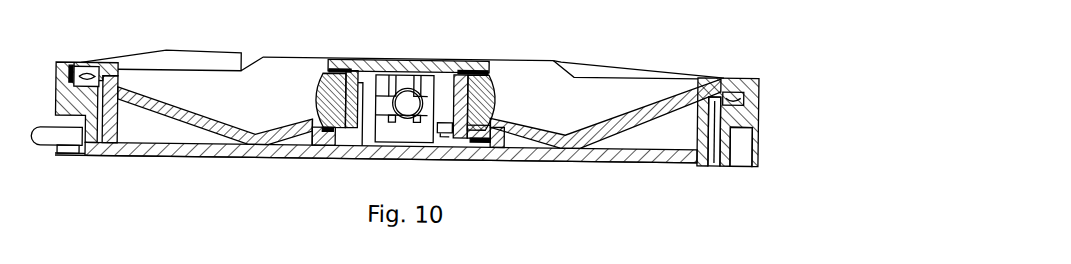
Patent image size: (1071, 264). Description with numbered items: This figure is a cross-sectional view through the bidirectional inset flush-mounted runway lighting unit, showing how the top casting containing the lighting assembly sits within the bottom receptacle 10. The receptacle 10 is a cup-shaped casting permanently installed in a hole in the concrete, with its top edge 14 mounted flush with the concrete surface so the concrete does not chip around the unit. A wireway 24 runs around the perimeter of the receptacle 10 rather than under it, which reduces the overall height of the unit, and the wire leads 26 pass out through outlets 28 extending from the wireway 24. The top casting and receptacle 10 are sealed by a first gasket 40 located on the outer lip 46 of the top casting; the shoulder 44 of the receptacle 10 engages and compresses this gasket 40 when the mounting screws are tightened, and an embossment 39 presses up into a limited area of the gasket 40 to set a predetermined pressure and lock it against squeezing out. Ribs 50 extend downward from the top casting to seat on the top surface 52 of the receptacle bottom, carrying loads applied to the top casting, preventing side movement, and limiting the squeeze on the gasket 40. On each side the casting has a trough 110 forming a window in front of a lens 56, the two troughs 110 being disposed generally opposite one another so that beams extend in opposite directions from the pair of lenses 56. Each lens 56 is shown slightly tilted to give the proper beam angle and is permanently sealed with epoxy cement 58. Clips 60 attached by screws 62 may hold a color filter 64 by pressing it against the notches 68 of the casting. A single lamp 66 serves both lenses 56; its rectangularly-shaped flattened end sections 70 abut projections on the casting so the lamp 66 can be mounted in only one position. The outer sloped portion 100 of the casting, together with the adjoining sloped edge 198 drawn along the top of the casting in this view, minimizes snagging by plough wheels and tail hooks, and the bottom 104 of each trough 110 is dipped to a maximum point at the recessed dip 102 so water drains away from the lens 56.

The bottom receptacle 10 is at (197, 151).
The top edge 14 is at (752, 69).
The wireway 24 is at (77, 153).
The wire leads 26 is at (45, 147).
The outlets 28 is at (58, 120).
The embossment 39 is at (110, 100).
The first gasket 40 is at (76, 65).
The shoulder 44 is at (88, 86).
The outer lip 46 is at (84, 64).
The ribs 50 is at (103, 132).
The top surface 52 is at (176, 140).
The lens 56 is at (314, 96).
The epoxy cement 58 is at (338, 66).
The clips 60 is at (438, 120).
The screws 62 is at (460, 133).
The color filter 64 is at (360, 67).
The lamp 66 is at (401, 122).
The notches 68 is at (365, 77).
The flattened end sections 70 is at (410, 112).
The outer sloped portion 100 is at (143, 50).
The recessed dip 102 is at (558, 131).
The bottom of trough 104 is at (618, 110).
The troughs 110 is at (658, 78).
The facet 198 is at (602, 61).